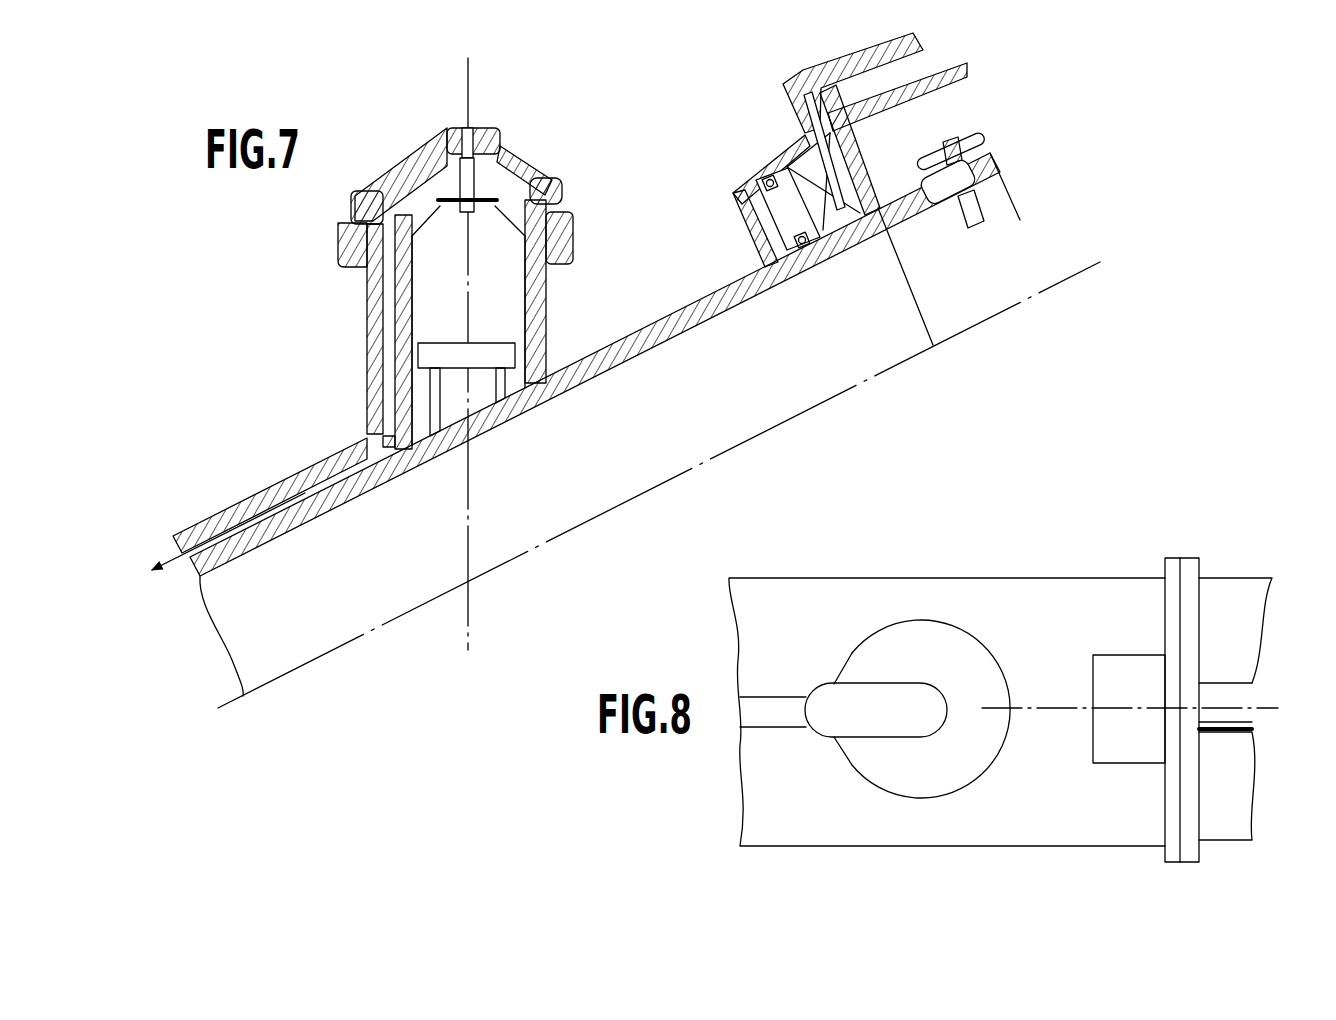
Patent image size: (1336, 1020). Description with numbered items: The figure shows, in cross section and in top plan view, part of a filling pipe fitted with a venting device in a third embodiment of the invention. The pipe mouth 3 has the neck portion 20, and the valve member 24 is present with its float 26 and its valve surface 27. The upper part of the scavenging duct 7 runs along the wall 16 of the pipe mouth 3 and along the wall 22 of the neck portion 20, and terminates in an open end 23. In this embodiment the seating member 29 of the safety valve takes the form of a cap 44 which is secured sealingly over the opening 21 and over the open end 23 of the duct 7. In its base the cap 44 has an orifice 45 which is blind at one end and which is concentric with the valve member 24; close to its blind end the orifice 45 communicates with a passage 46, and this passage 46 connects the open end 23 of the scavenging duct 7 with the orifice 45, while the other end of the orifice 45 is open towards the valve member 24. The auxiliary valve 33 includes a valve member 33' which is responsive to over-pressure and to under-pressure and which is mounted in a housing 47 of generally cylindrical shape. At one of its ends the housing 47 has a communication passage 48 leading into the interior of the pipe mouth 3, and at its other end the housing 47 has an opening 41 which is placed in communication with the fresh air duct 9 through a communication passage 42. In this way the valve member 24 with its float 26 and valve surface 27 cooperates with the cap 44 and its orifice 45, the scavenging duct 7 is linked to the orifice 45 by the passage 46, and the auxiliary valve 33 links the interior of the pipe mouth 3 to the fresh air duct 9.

In FIG. 7, the pipe mouth 3 is at (670, 288).
In FIG. 7, the scavenging duct 7 is at (277, 484).
In FIG. 7, the fresh air duct 9 is at (899, 41).
In FIG. 8, the fresh air duct 9 is at (1222, 683).
In FIG. 7, the wall 16 is at (587, 381).
In FIG. 7, the neck portion 20 is at (546, 325).
In FIG. 7, the opening 21 is at (562, 205).
In FIG. 7, the wall 22 is at (572, 263).
In FIG. 7, the open end 23 is at (366, 240).
In FIG. 7, the valve member 24 is at (490, 275).
In FIG. 7, the float 26 is at (436, 350).
In FIG. 7, the valve surface 27 is at (522, 190).
In FIG. 7, the seating member 29 is at (500, 132).
In FIG. 7, the auxiliary valve 33 is at (796, 150).
In FIG. 7, the valve member 33' is at (817, 242).
In FIG. 7, the opening 41 is at (857, 150).
In FIG. 7, the communication passage 42 is at (850, 130).
In FIG. 7, the cap 44 is at (457, 118).
In FIG. 7, the orifice 45 is at (474, 163).
In FIG. 7, the passage 46 is at (416, 150).
In FIG. 7, the housing 47 is at (744, 159).
In FIG. 8, the housing 47 is at (1132, 648).
In FIG. 7, the communication passage 48 is at (792, 263).